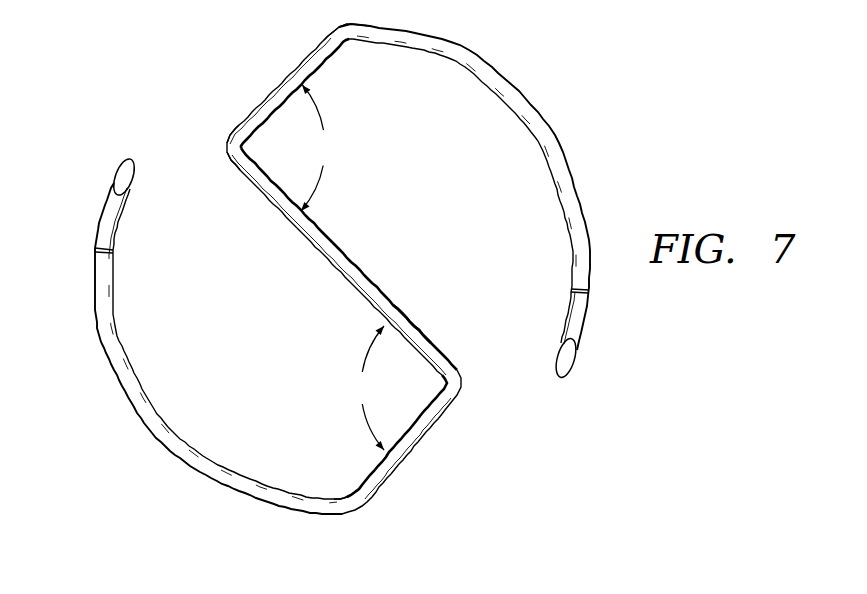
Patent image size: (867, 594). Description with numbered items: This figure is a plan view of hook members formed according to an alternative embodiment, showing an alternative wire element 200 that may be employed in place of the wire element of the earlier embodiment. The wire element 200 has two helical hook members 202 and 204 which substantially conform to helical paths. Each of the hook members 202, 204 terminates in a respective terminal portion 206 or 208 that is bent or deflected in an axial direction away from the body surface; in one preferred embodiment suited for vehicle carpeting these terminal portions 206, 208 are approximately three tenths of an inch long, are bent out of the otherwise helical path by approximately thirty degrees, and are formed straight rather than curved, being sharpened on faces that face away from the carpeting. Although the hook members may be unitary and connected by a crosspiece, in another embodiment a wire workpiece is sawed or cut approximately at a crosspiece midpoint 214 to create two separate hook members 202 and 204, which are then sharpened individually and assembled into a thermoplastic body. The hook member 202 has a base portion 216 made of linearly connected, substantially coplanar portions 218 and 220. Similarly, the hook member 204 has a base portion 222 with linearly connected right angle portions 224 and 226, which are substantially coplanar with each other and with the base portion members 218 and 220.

The wire element 200 is at (580, 126).
The hook member 202 is at (492, 69).
The hook member 204 is at (142, 419).
The terminal portion 206 is at (589, 328).
The terminal portion 208 is at (104, 211).
The crosspiece midpoint 214 is at (347, 278).
The base portion 216 is at (311, 50).
The base portion member 218 is at (262, 102).
The base portion member 220 is at (269, 199).
The base portion 222 is at (410, 453).
The right angle portion 224 is at (363, 483).
The right angle portion 226 is at (409, 320).